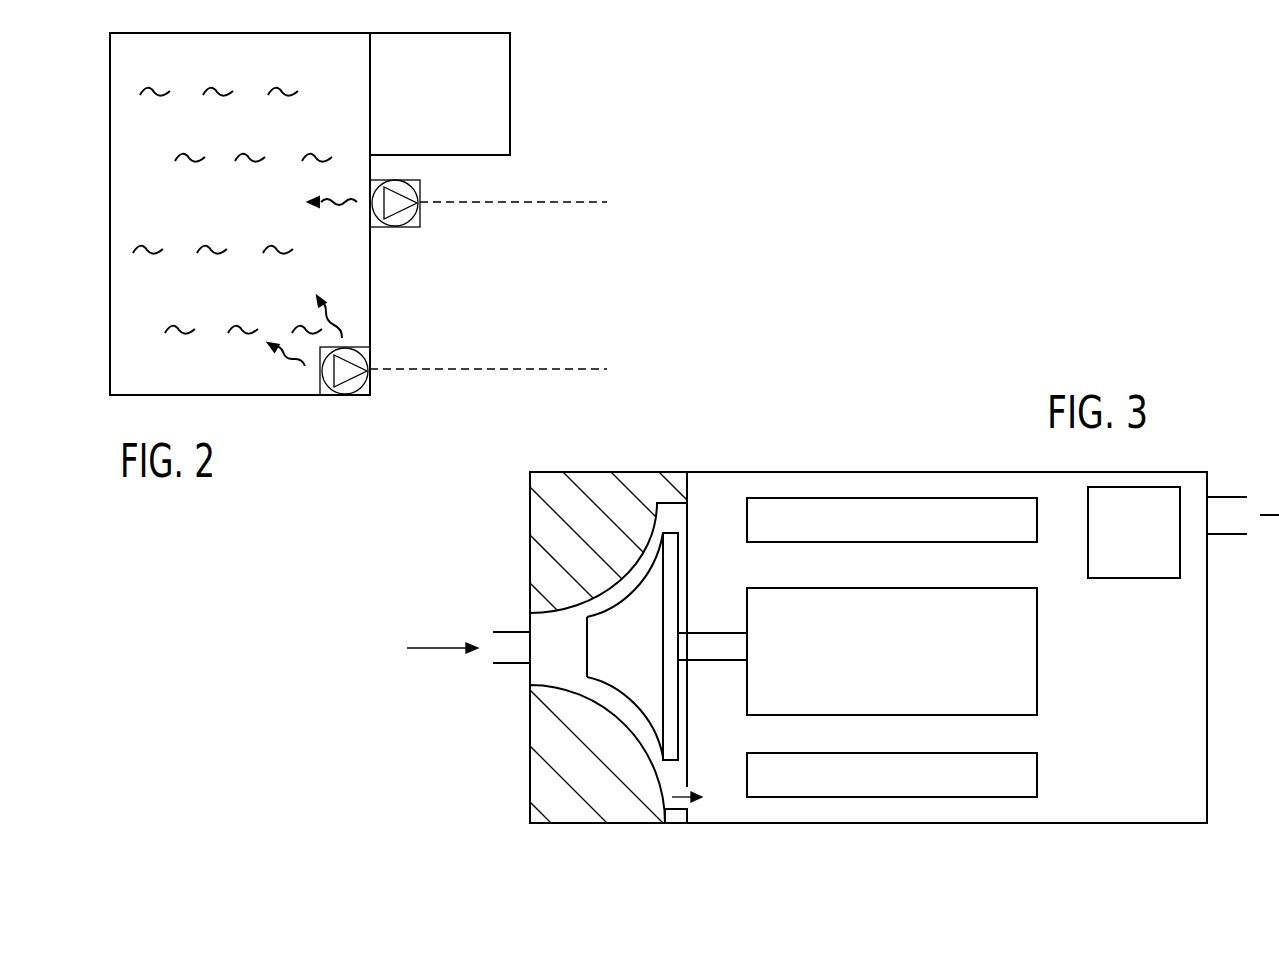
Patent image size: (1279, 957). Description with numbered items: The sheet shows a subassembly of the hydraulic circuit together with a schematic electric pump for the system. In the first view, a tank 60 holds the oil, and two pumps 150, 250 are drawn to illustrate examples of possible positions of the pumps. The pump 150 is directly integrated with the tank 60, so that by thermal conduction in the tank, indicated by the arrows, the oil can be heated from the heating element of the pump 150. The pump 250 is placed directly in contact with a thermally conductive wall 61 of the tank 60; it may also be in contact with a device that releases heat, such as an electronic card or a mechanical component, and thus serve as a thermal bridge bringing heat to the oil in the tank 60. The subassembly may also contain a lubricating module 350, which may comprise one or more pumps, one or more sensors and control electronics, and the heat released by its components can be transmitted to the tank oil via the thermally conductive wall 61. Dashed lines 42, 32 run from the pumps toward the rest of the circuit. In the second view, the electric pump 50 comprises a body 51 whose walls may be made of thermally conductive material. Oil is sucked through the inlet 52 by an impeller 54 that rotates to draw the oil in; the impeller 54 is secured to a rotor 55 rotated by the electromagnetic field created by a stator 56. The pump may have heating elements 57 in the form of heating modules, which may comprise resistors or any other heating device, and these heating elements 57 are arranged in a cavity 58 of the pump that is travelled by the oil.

In FIG. 2, the tank 60 is at (141, 386).
In FIG. 2, the thermally conductive wall 61 is at (371, 315).
In FIG. 2, the lubricating module 350 is at (421, 106).
In FIG. 2, the pump 250 is at (396, 206).
In FIG. 2, the pump 150 is at (347, 373).
In FIG. 2, the upper line 42 is at (538, 203).
In FIG. 2, the lower line 32 is at (492, 370).
In FIG. 3, the electric pump 50 is at (843, 686).
In FIG. 3, the body 51 is at (995, 824).
In FIG. 3, the inlet 52 is at (477, 632).
In FIG. 3, the impeller 54 is at (614, 659).
In FIG. 3, the rotor 55 is at (880, 666).
In FIG. 3, the stator 56 is at (880, 531).
In FIG. 3, the heating elements 57 is at (1120, 544).
In FIG. 3, the cavity 58 is at (1109, 662).